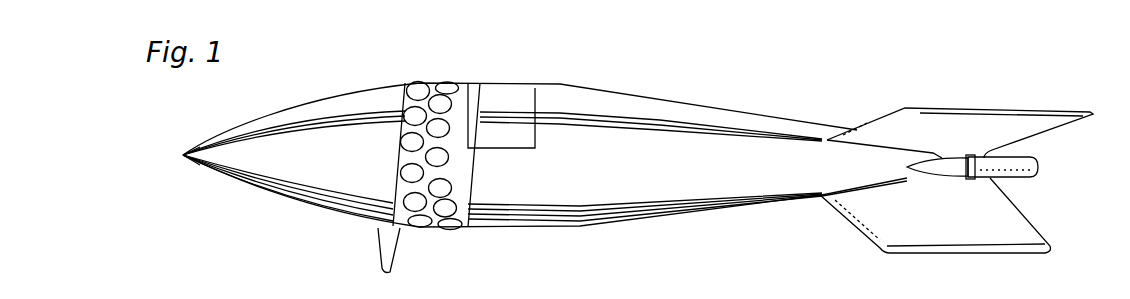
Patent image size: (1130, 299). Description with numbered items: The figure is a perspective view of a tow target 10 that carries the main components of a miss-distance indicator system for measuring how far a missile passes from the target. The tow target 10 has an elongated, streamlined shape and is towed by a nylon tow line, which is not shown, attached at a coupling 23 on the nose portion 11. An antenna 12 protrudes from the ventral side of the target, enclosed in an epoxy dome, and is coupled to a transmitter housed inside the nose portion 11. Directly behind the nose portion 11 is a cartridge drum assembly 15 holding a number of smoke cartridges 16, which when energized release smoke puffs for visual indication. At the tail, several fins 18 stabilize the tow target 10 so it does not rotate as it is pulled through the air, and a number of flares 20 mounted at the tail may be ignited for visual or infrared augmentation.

The tow target 10 is at (624, 158).
The nose portion 11 is at (312, 110).
The antenna 12 is at (386, 262).
The cartridge drum assembly 15 is at (457, 136).
The smoke cartridges 16 is at (424, 88).
The fins 18 is at (870, 120).
The flares 20 is at (1023, 175).
The coupling 23 is at (183, 155).